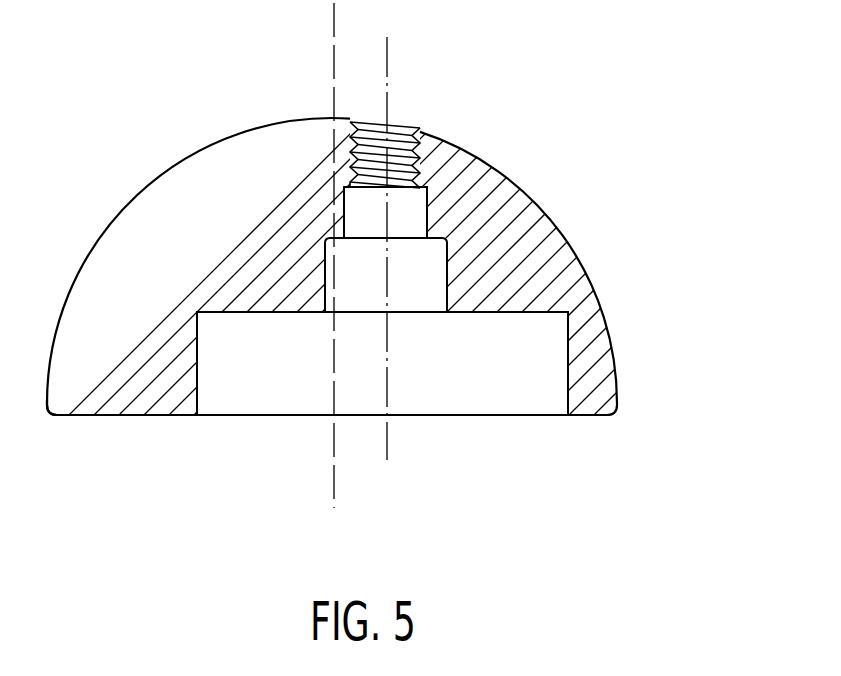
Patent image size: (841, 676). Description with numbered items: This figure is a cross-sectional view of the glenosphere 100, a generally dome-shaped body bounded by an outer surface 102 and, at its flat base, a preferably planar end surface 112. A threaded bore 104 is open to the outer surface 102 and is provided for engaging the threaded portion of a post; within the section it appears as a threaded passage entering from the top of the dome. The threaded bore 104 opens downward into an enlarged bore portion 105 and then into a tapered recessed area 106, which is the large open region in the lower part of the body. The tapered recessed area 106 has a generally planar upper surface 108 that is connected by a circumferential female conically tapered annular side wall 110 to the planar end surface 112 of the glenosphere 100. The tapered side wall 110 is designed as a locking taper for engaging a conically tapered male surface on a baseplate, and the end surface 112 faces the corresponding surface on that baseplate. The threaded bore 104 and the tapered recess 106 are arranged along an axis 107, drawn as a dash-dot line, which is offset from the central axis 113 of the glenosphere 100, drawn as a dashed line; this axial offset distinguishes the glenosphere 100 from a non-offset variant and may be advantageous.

The glenosphere 100 is at (441, 274).
The outer surface 102 is at (533, 211).
The threaded bore 104 is at (398, 142).
The enlarged bore portion 105 is at (358, 282).
The tapered recessed area 106 is at (522, 417).
The axis 107 is at (387, 62).
The planar upper surface 108 is at (536, 313).
The conically tapered annular side wall 110 is at (567, 395).
The end surface 112 is at (130, 415).
The central axis 113 is at (334, 5).